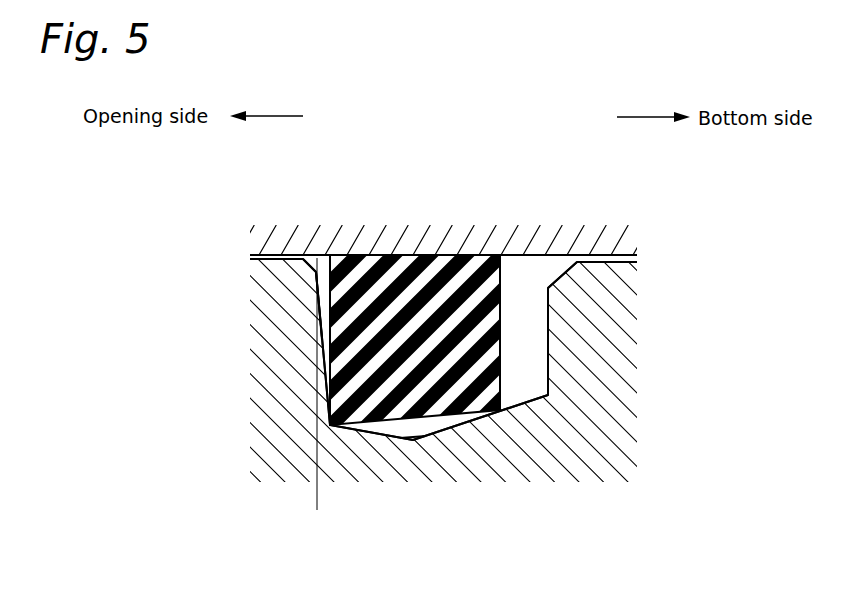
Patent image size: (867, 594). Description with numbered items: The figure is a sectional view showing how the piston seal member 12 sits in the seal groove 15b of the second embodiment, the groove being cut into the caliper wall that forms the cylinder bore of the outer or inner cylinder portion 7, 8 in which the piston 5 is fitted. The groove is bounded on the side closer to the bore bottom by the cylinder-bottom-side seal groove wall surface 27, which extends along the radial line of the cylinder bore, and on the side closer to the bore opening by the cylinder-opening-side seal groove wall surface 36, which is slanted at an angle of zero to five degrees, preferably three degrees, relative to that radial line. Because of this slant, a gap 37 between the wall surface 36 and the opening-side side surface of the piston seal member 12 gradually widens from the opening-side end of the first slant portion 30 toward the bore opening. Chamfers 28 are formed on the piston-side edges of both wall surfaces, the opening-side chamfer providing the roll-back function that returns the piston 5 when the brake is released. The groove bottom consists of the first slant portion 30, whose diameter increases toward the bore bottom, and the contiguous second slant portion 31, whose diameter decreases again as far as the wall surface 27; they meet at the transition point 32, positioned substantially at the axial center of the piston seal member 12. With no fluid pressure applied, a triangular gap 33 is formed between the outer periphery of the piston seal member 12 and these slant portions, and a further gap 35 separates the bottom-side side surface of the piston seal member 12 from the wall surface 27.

The piston 5 is at (468, 200).
The outer cylinder portion 7 is at (433, 350).
The inner cylinder portion 8 is at (607, 347).
The piston seal member 12 is at (412, 262).
The seal groove 15b is at (524, 290).
The cylinder-bottom-side seal groove wall surface 27 is at (548, 303).
The chamfer 28 is at (310, 262).
The first slant portion 30 is at (368, 432).
The second slant portion 31 is at (518, 405).
The transition point 32 is at (412, 441).
The gap 33 is at (434, 436).
The gap 35 is at (548, 376).
The cylinder-opening-side seal groove wall surface 36 is at (318, 312).
The gap 37 is at (315, 268).